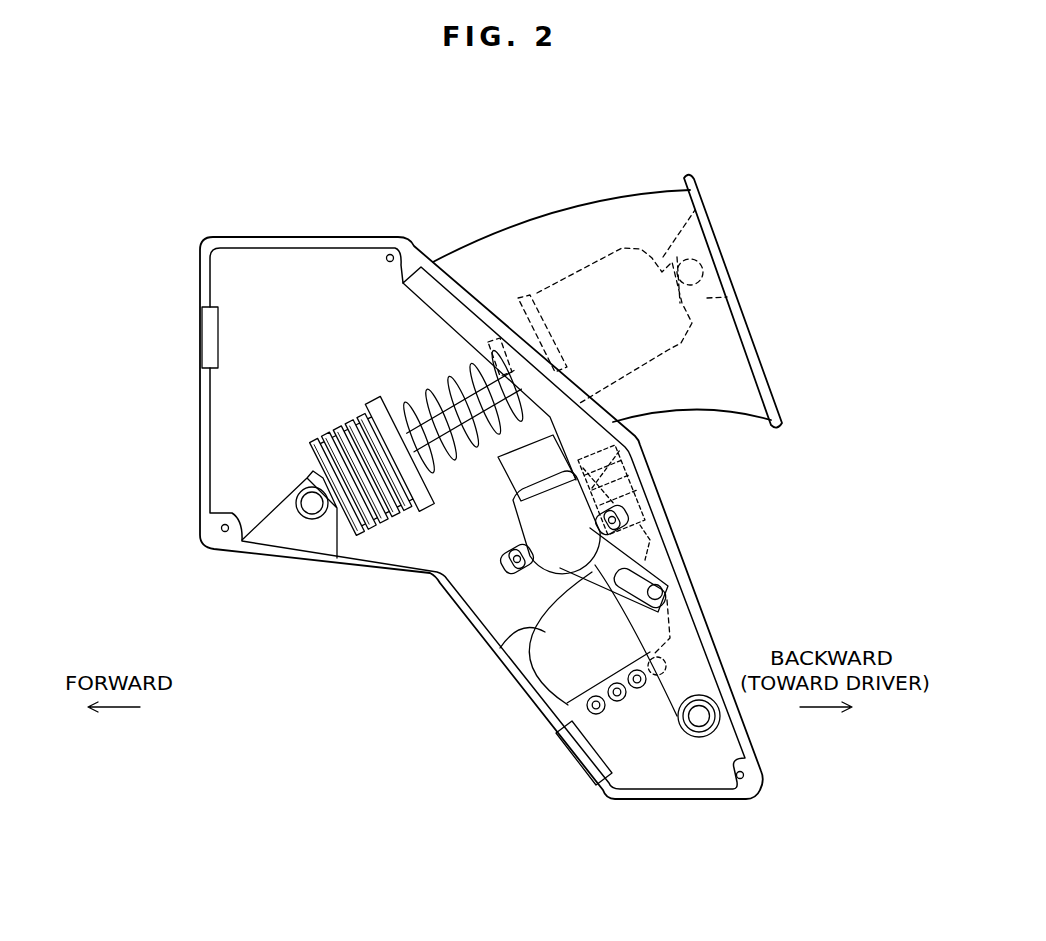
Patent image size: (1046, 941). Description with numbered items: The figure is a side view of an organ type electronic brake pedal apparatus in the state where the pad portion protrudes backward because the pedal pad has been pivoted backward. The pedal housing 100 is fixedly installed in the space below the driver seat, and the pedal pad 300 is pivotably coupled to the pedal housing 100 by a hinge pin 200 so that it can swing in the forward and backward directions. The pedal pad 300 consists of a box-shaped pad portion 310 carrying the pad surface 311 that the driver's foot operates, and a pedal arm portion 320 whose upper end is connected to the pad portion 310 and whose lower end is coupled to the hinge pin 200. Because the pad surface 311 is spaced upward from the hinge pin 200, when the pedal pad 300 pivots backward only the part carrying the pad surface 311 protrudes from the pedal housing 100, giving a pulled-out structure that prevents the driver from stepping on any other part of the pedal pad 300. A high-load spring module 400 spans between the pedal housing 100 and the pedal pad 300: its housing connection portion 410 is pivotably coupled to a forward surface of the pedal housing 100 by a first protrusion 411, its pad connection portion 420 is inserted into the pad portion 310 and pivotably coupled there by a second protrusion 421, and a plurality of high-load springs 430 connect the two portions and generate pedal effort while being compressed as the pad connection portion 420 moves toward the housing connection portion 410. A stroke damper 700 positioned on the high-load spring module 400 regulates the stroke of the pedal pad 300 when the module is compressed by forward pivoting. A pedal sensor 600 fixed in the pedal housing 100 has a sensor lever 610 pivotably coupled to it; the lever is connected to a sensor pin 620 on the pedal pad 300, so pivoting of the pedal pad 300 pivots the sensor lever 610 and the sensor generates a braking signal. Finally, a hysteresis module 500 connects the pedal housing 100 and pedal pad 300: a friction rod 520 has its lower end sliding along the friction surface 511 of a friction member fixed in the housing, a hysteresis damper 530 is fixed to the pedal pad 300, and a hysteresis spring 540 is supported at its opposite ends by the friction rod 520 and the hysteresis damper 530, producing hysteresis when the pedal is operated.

The pedal housing 100 is at (230, 236).
The hinge pin 200 is at (699, 719).
The pedal pad 300 is at (649, 267).
The pad portion 310 is at (550, 215).
The pad surface 311 is at (772, 358).
The pedal arm portion 320 is at (680, 673).
The high-load spring module 400 is at (323, 329).
The housing connection portion 410 is at (315, 452).
The first protrusion 411 is at (312, 506).
The pad connection portion 420 is at (553, 307).
The second protrusion 421 is at (700, 272).
The high-load springs 430 is at (425, 390).
The hysteresis module 500 is at (553, 675).
The friction surface 511 is at (550, 628).
The friction rod 520 is at (650, 537).
The hysteresis damper 530 is at (620, 455).
The hysteresis spring 540 is at (617, 483).
The pedal sensor 600 is at (527, 517).
The sensor lever 610 is at (592, 576).
The sensor pin 620 is at (660, 592).
The stroke damper 700 is at (343, 412).